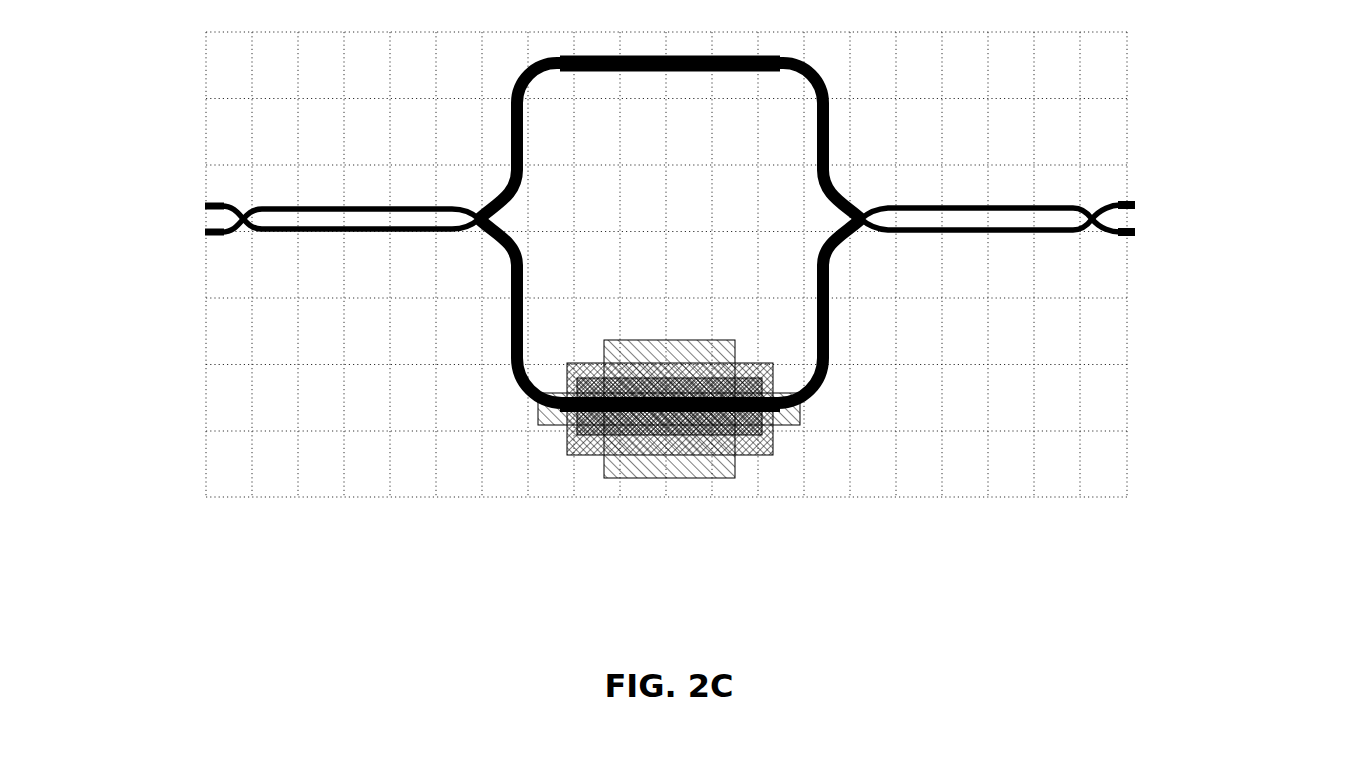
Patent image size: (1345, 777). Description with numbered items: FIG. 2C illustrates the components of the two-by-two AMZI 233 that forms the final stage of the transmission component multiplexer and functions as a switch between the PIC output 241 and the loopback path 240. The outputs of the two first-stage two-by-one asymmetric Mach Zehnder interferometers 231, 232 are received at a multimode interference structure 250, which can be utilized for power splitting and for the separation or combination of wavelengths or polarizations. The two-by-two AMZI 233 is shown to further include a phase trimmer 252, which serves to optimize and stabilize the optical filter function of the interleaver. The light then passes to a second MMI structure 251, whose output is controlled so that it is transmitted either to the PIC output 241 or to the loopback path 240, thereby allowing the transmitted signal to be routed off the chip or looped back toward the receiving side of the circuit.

The 2×1 asymmetric Mach Zehnder interferometer 231 is at (212, 198).
The 2×1 asymmetric Mach Zehnder interferometer 232 is at (203, 233).
The 2×2 AMZI 233 is at (1029, 68).
The loopback path 240 is at (1137, 233).
The PIC output 241 is at (1137, 197).
The multimode interference structure 250 is at (350, 198).
The MMI structure 251 is at (990, 203).
The phase trimmer 252 is at (745, 458).